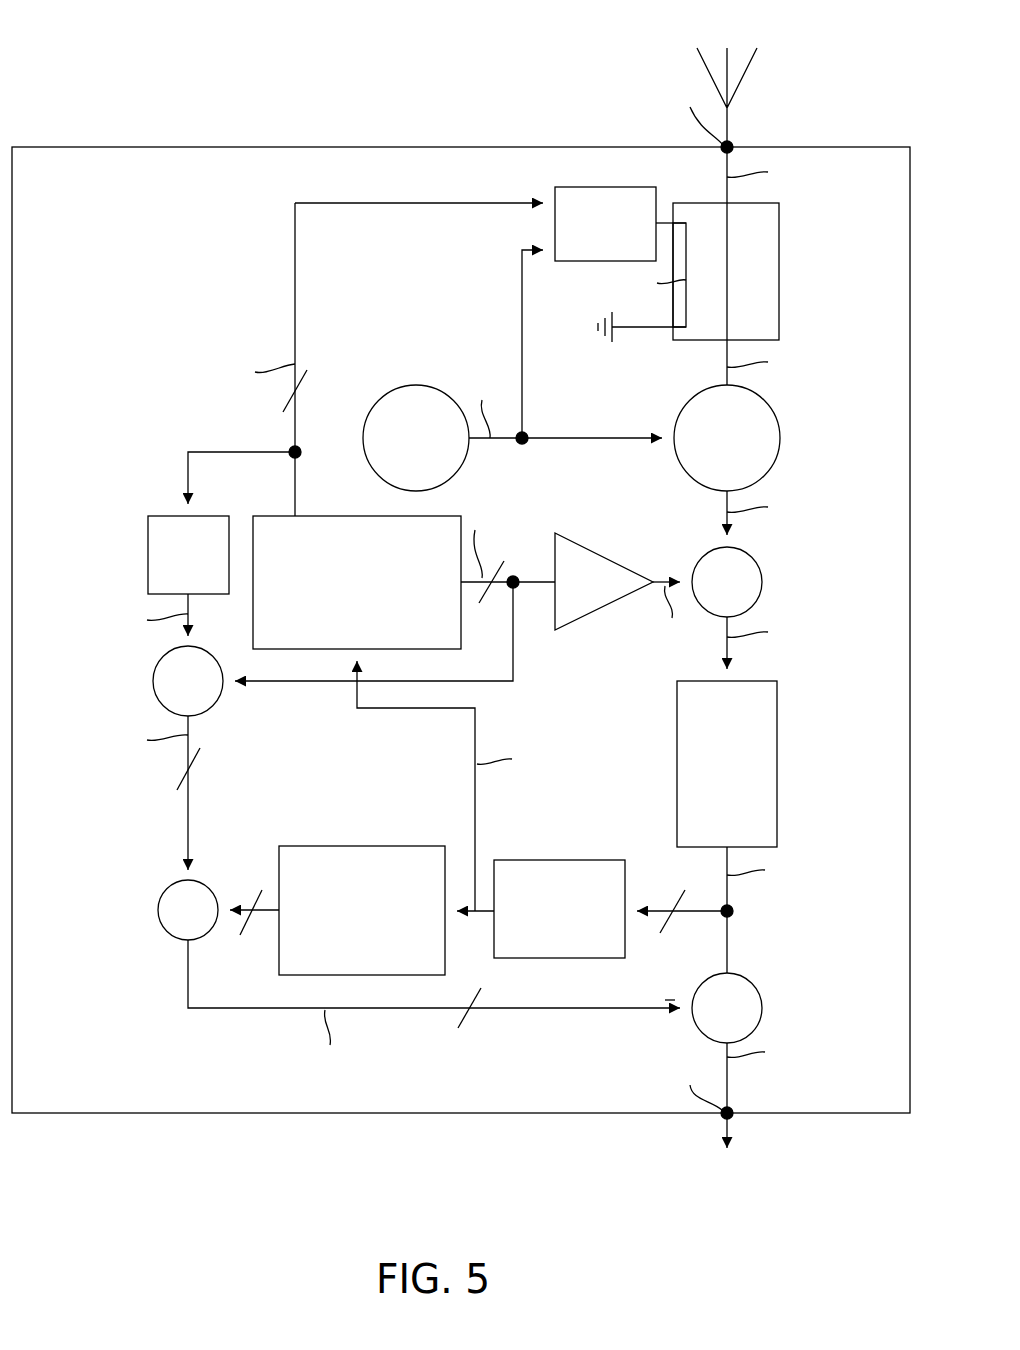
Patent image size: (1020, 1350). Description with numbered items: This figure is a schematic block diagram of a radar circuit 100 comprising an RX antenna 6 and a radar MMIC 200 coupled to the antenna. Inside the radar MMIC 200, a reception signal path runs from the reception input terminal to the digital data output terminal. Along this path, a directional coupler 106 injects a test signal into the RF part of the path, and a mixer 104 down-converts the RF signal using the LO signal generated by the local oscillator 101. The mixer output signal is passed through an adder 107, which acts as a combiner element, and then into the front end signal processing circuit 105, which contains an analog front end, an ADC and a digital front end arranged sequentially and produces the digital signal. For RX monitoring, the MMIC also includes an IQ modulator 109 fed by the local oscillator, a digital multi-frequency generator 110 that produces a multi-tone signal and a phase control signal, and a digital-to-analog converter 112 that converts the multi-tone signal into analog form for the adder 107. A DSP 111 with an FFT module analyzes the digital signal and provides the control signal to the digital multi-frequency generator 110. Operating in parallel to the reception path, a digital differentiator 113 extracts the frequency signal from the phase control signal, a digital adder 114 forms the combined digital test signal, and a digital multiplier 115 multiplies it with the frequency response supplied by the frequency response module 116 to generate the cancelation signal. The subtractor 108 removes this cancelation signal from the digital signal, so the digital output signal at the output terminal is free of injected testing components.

The radar circuit 100 is at (133, 43).
The radar MMIC 200 is at (348, 147).
The RX antenna 6 is at (743, 77).
The directional coupler 106 is at (779, 265).
The IQ modulator 109 is at (555, 224).
The local oscillator 101 is at (415, 385).
The mixer 104 is at (780, 438).
The adder 107 is at (762, 582).
The front end signal processing circuit 105 is at (777, 760).
The subtractor 108 is at (762, 1008).
The digital multi-frequency generator 110 is at (335, 516).
The digital-to-analog converter 112 is at (622, 560).
The DSP 111 is at (558, 860).
The digital differentiator 113 is at (148, 555).
The digital adder 114 is at (153, 681).
The digital multiplier 115 is at (158, 910).
The frequency response module 116 is at (362, 846).